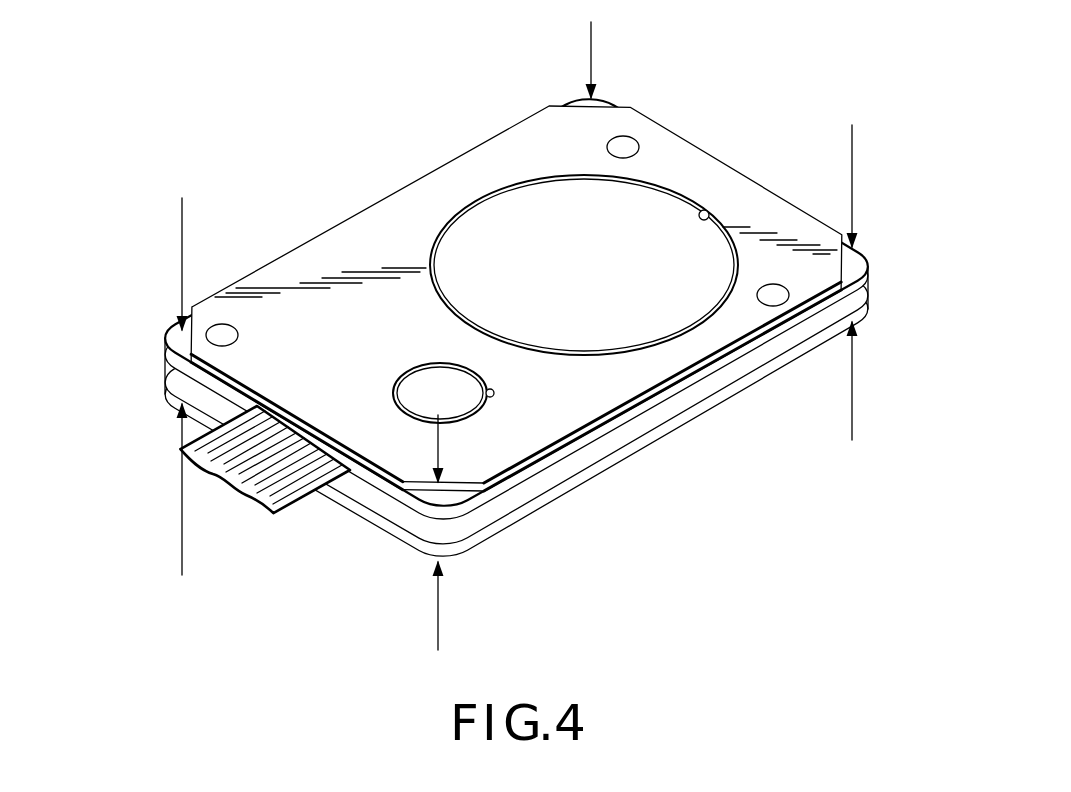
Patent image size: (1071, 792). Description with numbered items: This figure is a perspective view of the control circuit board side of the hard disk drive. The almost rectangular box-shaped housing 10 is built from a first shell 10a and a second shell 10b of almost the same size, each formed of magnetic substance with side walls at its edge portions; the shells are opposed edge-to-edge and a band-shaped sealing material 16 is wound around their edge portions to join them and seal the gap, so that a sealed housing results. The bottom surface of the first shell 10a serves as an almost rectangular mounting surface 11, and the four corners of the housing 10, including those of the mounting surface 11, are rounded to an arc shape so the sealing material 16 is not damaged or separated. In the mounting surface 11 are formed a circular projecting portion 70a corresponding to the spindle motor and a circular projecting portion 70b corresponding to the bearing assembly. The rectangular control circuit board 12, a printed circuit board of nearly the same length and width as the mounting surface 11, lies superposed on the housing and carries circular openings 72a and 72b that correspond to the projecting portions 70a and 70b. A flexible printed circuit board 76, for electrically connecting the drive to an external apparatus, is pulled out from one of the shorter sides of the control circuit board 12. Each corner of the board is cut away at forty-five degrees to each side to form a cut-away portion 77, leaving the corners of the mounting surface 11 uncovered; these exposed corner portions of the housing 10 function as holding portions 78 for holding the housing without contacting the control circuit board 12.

The housing 10 is at (516, 334).
The first shell 10a is at (548, 466).
The second shell 10b is at (613, 470).
The mounting surface 11 is at (690, 383).
The control circuit board 12 is at (337, 243).
The sealing material 16 is at (775, 352).
The circular projecting portion 70a is at (517, 207).
The circular projecting portion 70b is at (427, 386).
The circular opening 72a is at (712, 212).
The circular opening 72b is at (495, 392).
The flexible printed circuit board 76 is at (283, 500).
The cut-away portion 77 is at (606, 103).
The holding portion 78 is at (583, 96).